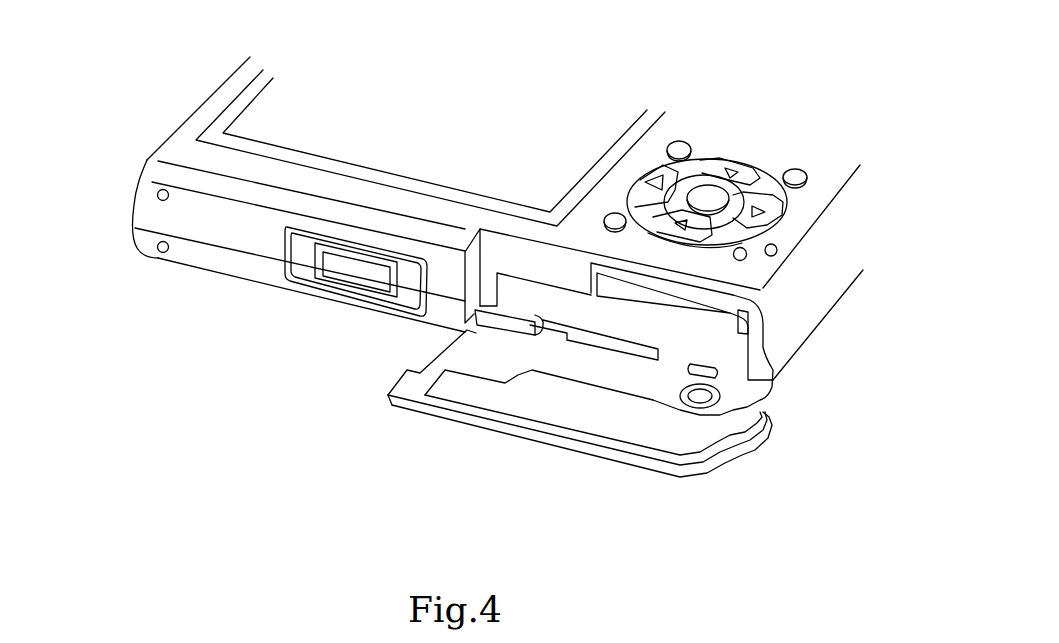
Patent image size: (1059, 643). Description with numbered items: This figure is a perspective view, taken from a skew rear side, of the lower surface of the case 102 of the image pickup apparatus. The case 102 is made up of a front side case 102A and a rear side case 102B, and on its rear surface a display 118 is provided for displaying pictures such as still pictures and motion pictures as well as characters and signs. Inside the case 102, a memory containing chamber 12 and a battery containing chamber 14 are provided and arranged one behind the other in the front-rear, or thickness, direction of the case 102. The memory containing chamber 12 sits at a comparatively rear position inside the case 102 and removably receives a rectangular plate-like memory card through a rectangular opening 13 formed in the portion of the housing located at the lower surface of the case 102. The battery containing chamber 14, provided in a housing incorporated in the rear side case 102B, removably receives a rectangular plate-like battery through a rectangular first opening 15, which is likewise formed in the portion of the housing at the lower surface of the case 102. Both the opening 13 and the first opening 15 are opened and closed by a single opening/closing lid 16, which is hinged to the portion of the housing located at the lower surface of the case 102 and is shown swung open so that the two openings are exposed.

The case 102 is at (142, 175).
The front side case 102A is at (207, 275).
The rear side case 102B is at (195, 167).
The display 118 is at (493, 155).
The memory containing chamber 12 is at (708, 306).
The opening 13 is at (720, 317).
The battery containing chamber 14 is at (537, 298).
The first opening 15 is at (627, 323).
The opening/closing lid 16 is at (388, 398).